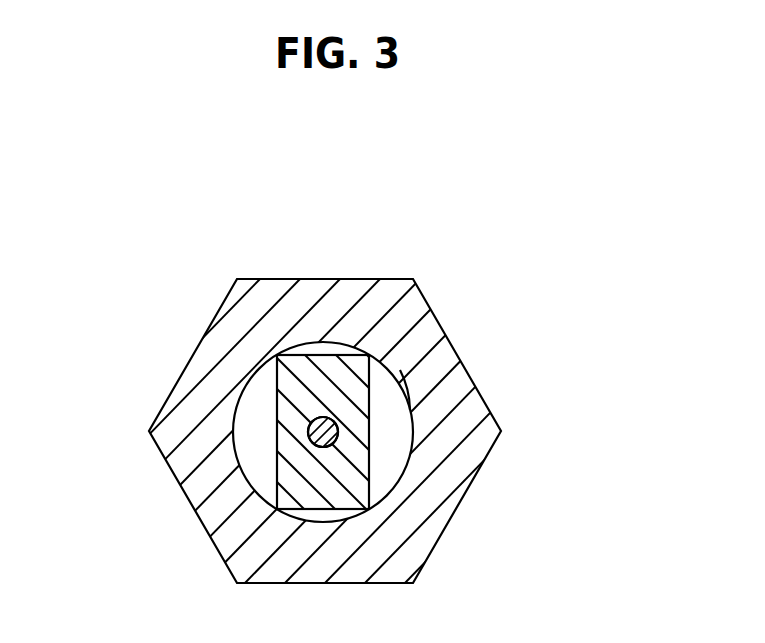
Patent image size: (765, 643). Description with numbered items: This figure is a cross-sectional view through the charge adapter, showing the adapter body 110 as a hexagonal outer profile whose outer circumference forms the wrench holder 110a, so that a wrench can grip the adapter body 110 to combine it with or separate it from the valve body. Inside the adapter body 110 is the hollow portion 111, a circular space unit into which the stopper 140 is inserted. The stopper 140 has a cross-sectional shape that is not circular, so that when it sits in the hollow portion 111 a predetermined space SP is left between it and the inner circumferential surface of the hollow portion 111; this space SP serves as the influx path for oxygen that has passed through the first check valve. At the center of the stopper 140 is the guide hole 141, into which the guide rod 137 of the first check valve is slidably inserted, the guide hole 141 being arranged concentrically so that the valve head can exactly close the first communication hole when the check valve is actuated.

The adapter body 110 is at (212, 268).
The wrench holder 110a is at (411, 410).
The hollow portion 111 is at (407, 386).
The stopper 140 is at (360, 427).
The guide hole 141 is at (340, 437).
The guide rod 137 is at (313, 440).
The space SP is at (250, 437).